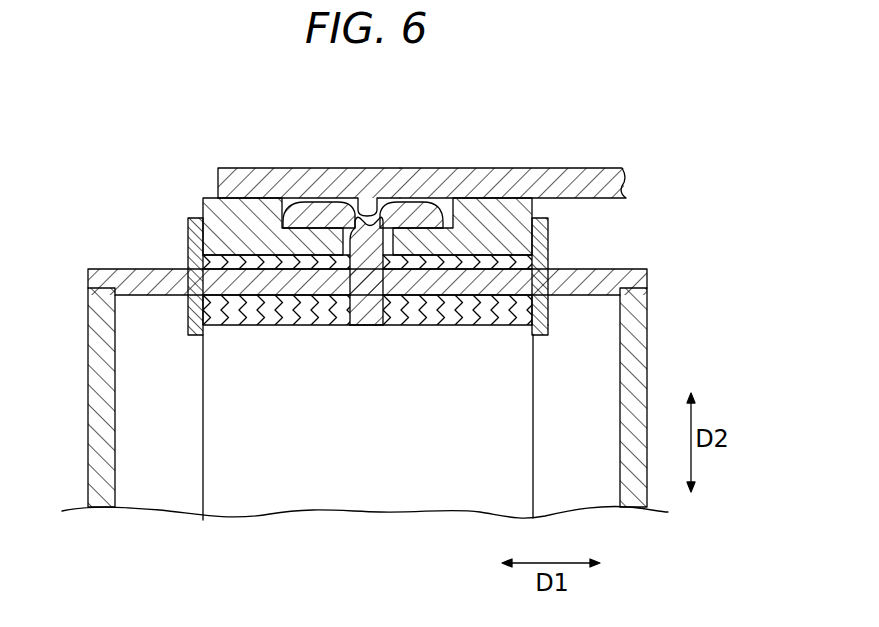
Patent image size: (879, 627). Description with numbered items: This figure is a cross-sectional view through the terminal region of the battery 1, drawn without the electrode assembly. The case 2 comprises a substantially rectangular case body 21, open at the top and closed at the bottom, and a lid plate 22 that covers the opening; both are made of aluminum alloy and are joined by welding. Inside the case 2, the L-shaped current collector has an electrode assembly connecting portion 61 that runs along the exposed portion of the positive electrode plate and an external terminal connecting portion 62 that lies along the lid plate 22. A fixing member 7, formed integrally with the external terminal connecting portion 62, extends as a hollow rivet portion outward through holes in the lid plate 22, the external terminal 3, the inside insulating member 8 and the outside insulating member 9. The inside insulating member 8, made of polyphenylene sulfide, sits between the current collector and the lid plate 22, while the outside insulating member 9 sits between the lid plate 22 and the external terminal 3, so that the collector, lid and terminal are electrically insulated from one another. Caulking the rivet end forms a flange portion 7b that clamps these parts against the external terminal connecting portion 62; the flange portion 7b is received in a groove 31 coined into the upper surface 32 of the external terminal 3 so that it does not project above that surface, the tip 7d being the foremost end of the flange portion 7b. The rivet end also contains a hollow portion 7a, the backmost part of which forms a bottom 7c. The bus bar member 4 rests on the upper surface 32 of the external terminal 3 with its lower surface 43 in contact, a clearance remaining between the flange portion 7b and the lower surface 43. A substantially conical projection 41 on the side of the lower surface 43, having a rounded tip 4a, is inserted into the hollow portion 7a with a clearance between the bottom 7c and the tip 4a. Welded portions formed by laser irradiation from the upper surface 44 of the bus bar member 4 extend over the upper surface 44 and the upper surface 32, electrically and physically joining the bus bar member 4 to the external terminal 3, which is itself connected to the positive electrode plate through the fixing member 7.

The battery 1 is at (80, 245).
The case 2 is at (733, 283).
The case body 21 is at (640, 322).
The lid plate 22 is at (638, 280).
The external terminal 3 is at (213, 92).
The groove 31 is at (297, 198).
The upper surface 32 is at (210, 198).
The bus bar member 4 is at (393, 96).
The projection 41 is at (372, 214).
The tip 4a is at (422, 204).
The lower surface 43 is at (478, 199).
The upper surface 44 is at (490, 172).
The fixing member 7 is at (368, 334).
The hollow portion 7a is at (380, 326).
The flange portion 7b is at (307, 217).
The bottom 7c is at (352, 326).
The tip 7d is at (335, 203).
The inside insulating member 8 is at (540, 328).
The outside insulating member 9 is at (548, 228).
The electrode assembly connecting portion 61 is at (293, 480).
The external terminal connecting portion 62 is at (472, 324).